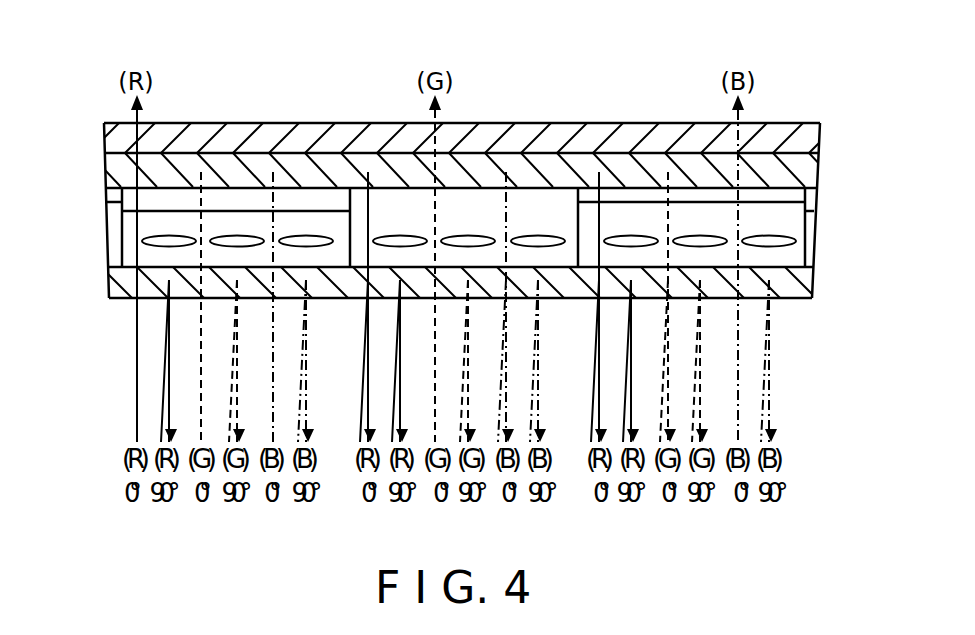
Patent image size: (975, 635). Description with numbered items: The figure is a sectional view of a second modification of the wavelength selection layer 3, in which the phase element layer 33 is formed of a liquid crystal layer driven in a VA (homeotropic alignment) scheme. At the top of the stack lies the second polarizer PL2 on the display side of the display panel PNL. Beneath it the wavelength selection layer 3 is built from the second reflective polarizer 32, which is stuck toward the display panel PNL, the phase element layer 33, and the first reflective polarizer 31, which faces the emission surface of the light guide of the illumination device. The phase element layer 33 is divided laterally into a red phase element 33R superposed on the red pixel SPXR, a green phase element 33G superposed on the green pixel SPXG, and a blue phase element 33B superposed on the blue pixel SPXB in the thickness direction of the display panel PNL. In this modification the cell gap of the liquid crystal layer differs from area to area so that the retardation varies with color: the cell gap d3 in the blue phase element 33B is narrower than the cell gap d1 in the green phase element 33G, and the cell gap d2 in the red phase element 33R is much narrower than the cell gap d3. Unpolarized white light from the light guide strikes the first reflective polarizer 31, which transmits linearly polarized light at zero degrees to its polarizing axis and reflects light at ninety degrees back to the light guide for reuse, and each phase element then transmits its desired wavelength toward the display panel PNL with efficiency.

The display panel PNL is at (830, 138).
The wavelength selection layer 3 is at (831, 174).
The second polarizer PL2 is at (100, 134).
The second reflective polarizer 32 is at (100, 172).
The phase element layer 33 is at (99, 275).
The red phase element 33R is at (236, 204).
The green phase element 33G is at (482, 203).
The blue phase element 33B is at (648, 202).
The first reflective polarizer 31 is at (106, 299).
The cell gap d1 is at (108, 267).
The cell gap d2 is at (121, 211).
The cell gap d3 is at (805, 202).
The red pixel SPXR is at (118, 67).
The green pixel SPXG is at (580, 67).
The blue pixel SPXB is at (580, 67).